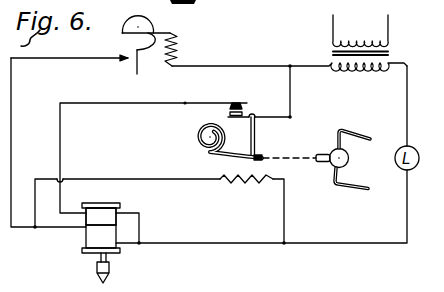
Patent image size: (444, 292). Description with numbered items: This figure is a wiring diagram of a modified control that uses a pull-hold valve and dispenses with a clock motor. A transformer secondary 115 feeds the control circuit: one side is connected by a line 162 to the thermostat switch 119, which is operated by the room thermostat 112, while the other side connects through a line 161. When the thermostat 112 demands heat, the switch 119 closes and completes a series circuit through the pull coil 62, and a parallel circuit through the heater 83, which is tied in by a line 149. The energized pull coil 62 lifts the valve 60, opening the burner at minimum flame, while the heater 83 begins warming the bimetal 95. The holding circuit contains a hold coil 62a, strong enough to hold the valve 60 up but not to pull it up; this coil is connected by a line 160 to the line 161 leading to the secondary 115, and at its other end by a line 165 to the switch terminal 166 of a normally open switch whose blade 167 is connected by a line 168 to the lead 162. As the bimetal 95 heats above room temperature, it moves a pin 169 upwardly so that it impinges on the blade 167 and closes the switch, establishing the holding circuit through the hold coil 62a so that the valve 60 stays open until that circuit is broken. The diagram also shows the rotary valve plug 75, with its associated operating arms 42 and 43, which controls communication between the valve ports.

The thermostat 112 is at (124, 37).
The thermostat switch 119 is at (126, 60).
The line 162 is at (213, 66).
The line 168 is at (292, 95).
The line 165 is at (61, 140).
The switch terminal 166 is at (236, 103).
The switch blade 167 is at (263, 114).
The pin 169 is at (256, 131).
The bimetal 95 is at (201, 148).
The secondary 115 is at (362, 77).
The line 161 is at (405, 97).
The rotary valve plug 75 is at (351, 160).
The valve lever 42 is at (363, 135).
The valve lever 43 is at (355, 192).
The heater 83 is at (247, 182).
The line 149 is at (285, 215).
The pull coil 62 is at (86, 229).
The hold coil 62a is at (98, 213).
The line 160 is at (140, 226).
The valve 60 is at (111, 266).